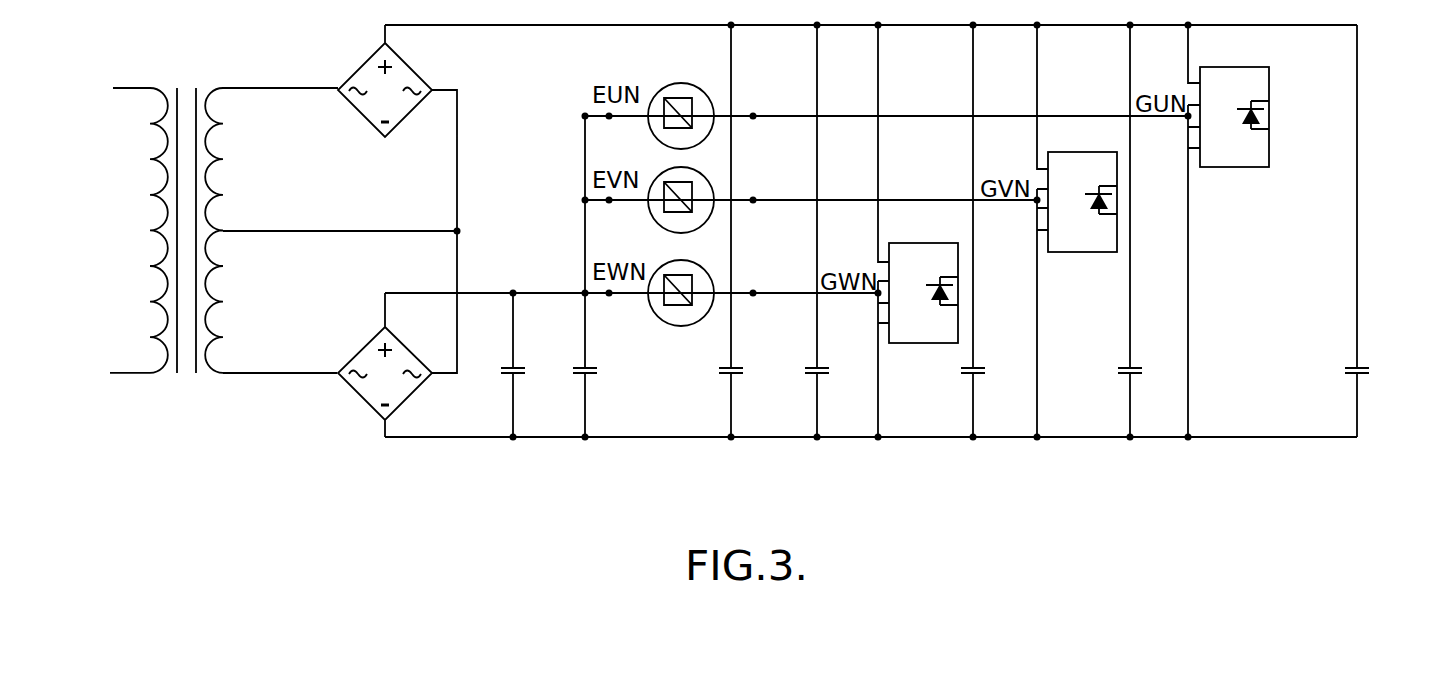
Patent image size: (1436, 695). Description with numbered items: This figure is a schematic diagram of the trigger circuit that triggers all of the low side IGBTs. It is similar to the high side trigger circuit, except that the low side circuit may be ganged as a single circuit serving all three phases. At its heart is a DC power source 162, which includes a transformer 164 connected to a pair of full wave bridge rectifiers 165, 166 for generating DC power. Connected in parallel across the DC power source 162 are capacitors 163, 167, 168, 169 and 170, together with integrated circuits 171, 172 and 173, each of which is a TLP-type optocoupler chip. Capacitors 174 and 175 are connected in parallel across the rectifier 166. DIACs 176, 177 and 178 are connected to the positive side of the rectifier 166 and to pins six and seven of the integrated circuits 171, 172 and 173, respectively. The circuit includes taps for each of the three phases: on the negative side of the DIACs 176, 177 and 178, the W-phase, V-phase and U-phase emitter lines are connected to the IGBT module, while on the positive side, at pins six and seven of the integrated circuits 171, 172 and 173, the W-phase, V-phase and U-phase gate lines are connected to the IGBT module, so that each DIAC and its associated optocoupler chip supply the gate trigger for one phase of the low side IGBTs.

The DC power source 162 is at (290, 398).
The capacitor 163 is at (748, 368).
The transformer 164 is at (150, 218).
The full wave bridge rectifier 165 is at (363, 117).
The full wave bridge rectifier 166 is at (360, 348).
The capacitor 167 is at (830, 368).
The capacitor 168 is at (997, 373).
The capacitor 169 is at (1142, 373).
The capacitor 170 is at (1367, 371).
The integrated circuit 171 is at (935, 343).
The integrated circuit 172 is at (1093, 250).
The integrated circuit 173 is at (1248, 167).
The capacitor 174 is at (602, 373).
The capacitor 175 is at (522, 377).
The DIAC 176 is at (682, 325).
The DIAC 177 is at (715, 210).
The DIAC 178 is at (715, 125).